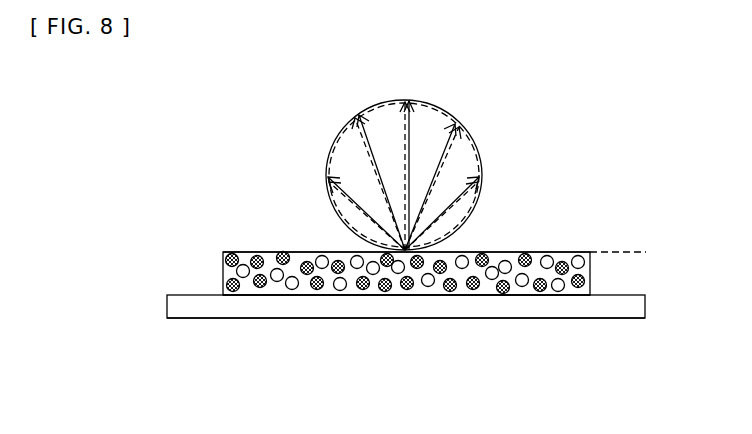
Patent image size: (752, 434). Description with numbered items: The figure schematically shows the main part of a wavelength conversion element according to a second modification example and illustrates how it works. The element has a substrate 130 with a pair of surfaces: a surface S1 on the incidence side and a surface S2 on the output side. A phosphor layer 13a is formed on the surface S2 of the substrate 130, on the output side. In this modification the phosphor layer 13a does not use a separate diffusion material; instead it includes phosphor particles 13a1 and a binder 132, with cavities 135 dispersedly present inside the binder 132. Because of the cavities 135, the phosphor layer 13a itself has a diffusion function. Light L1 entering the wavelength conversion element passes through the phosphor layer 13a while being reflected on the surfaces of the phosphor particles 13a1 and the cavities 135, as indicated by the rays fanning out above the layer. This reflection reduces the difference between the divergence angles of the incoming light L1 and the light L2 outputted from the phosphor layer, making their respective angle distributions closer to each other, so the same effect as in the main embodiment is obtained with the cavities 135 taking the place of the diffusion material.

The light entering the wavelength conversion element L1 is at (456, 117).
The light outputted from the phosphor layer L2 is at (478, 147).
The surface on incidence side S1 is at (199, 320).
The surface on output side S2 is at (194, 295).
The phosphor layer 13a is at (462, 318).
The phosphor particles 13a1 is at (477, 290).
The substrate 130 is at (640, 306).
The binder 132 is at (330, 297).
The cavities 135 is at (564, 291).